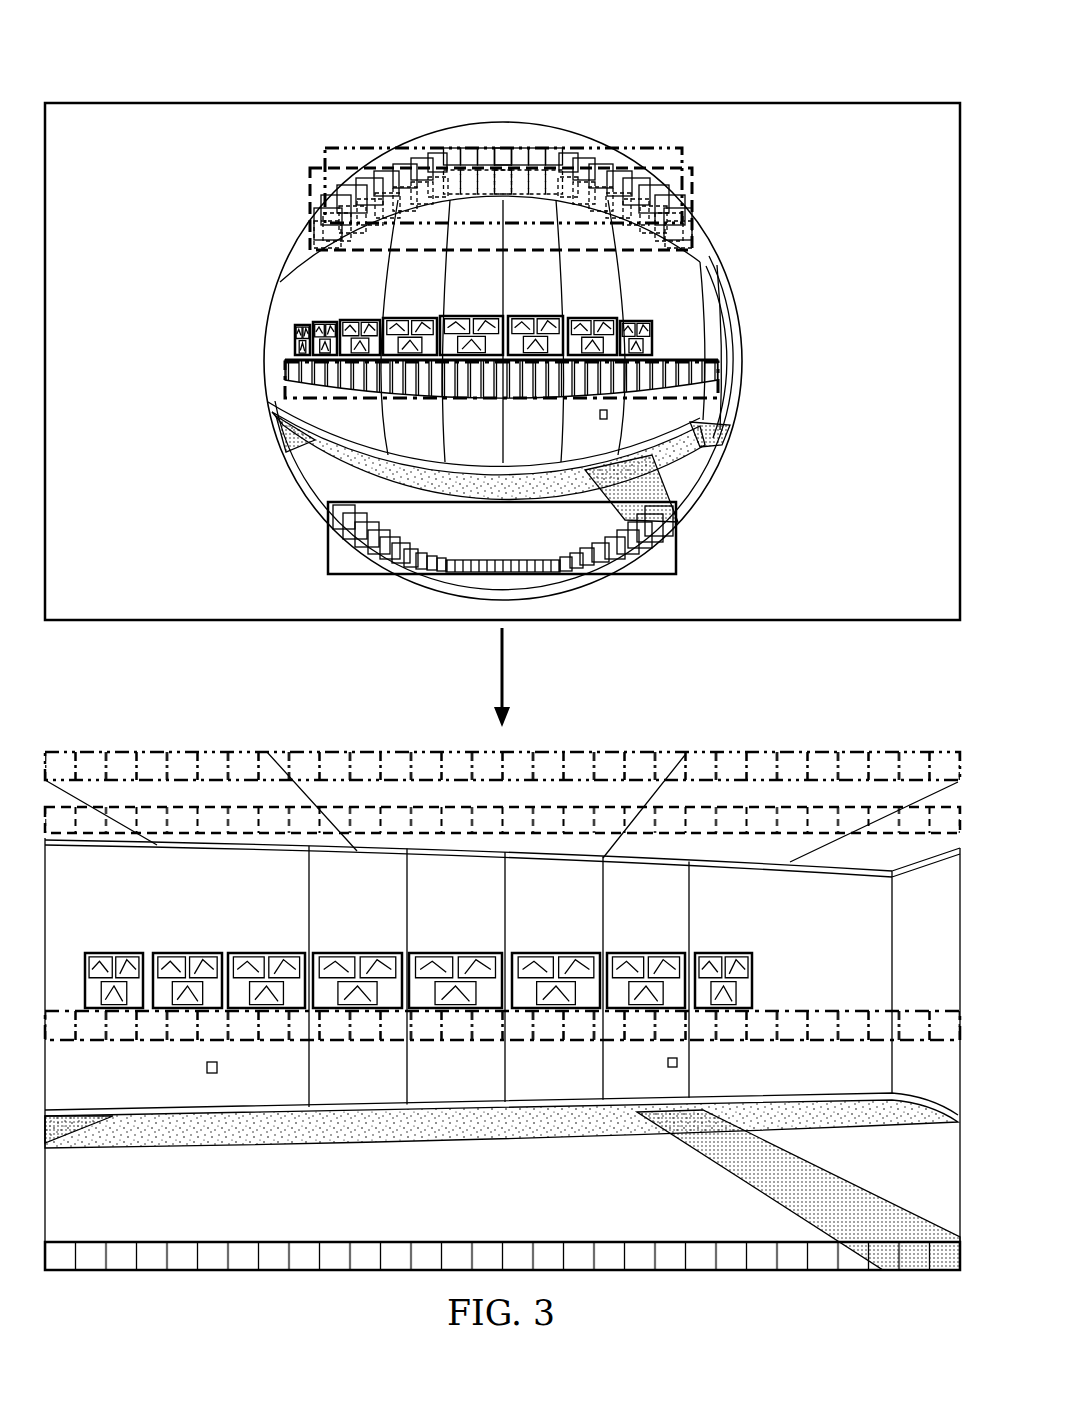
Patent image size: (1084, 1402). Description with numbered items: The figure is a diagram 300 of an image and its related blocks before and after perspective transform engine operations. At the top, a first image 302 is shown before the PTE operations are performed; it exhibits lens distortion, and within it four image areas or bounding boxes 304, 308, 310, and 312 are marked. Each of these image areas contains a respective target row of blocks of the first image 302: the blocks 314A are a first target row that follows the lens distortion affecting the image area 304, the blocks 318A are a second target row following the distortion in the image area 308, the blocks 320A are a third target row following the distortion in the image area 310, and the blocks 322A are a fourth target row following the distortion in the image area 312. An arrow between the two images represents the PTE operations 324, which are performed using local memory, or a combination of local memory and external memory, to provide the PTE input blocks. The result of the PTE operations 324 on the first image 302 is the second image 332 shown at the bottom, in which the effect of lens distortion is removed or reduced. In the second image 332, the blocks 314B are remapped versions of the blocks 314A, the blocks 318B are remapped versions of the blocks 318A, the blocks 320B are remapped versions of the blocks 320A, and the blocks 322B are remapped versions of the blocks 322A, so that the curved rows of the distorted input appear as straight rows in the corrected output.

The diagram 300 is at (300, 60).
The first image 302 is at (868, 375).
The image area 304 is at (370, 145).
The image area 308 is at (309, 192).
The image area 310 is at (283, 366).
The image area 312 is at (682, 554).
The blocks 314A is at (603, 153).
The blocks 314B is at (238, 750).
The blocks 318A is at (309, 233).
The blocks 318B is at (549, 838).
The blocks 320A is at (700, 394).
The blocks 320B is at (784, 1009).
The blocks 322A is at (433, 550).
The blocks 322B is at (735, 1273).
The PTE operations 324 is at (495, 673).
The second image 332 is at (522, 1203).